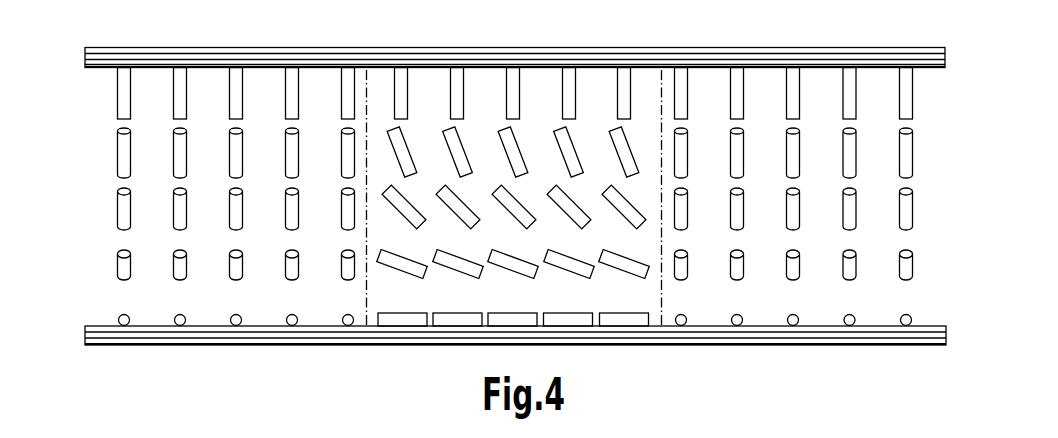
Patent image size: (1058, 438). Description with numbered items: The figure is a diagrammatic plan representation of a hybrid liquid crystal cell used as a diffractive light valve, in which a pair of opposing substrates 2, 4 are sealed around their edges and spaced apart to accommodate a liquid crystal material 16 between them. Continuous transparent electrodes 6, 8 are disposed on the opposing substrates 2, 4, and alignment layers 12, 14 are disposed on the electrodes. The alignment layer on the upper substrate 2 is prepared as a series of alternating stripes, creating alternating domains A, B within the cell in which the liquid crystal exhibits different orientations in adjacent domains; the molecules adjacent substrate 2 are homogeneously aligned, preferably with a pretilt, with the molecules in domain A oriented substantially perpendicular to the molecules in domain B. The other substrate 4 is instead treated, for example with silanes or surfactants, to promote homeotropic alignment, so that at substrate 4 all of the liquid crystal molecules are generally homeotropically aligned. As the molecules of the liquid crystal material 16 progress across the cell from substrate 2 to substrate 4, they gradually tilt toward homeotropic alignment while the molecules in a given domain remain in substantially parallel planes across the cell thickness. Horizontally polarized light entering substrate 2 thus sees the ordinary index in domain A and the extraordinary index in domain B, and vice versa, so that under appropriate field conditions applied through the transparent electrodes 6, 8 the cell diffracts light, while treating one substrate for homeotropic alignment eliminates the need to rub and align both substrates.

The substrate 2 is at (591, 53).
The transparent electrode 8 is at (787, 57).
The alignment layer 12 is at (866, 62).
The substrate 4 is at (183, 337).
The transparent electrode 6 is at (253, 333).
The alignment layer 14 is at (318, 328).
The liquid crystal material 16 is at (123, 160).
The domain A is at (267, 82).
The domain B is at (489, 83).